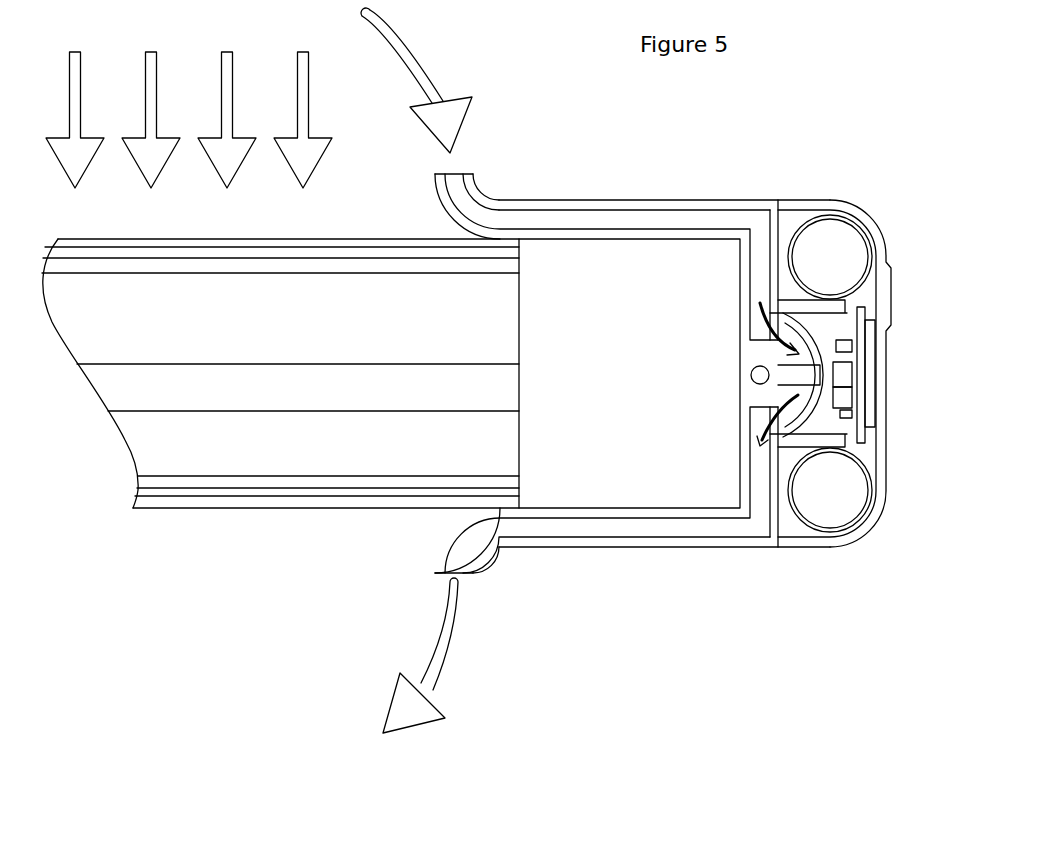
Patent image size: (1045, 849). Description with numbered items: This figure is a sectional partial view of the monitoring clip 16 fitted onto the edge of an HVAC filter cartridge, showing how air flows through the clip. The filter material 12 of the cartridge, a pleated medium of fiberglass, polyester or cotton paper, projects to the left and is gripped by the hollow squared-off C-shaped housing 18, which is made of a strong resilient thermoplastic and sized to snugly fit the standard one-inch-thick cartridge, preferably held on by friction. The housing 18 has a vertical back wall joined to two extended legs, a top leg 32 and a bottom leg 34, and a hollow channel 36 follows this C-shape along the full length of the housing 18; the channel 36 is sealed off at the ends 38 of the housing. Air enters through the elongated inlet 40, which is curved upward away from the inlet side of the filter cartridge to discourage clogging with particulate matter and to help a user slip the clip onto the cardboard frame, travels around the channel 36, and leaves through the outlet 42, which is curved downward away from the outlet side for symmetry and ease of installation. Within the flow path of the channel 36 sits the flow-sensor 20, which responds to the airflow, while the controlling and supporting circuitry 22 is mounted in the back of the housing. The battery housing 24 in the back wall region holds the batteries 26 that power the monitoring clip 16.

The filter material 12 is at (589, 323).
The monitoring clip 16 is at (782, 163).
The housing 18 is at (685, 543).
The flow-sensor 20 is at (797, 372).
The controlling and supporting circuitry 22 is at (860, 415).
The battery housing 24 is at (798, 542).
The batteries 26 is at (838, 250).
The top leg 32 is at (661, 200).
The bottom leg 34 is at (592, 542).
The hollow channel 36 is at (568, 218).
The ends 38 is at (479, 180).
The inlet 40 is at (458, 172).
The outlet 42 is at (456, 578).